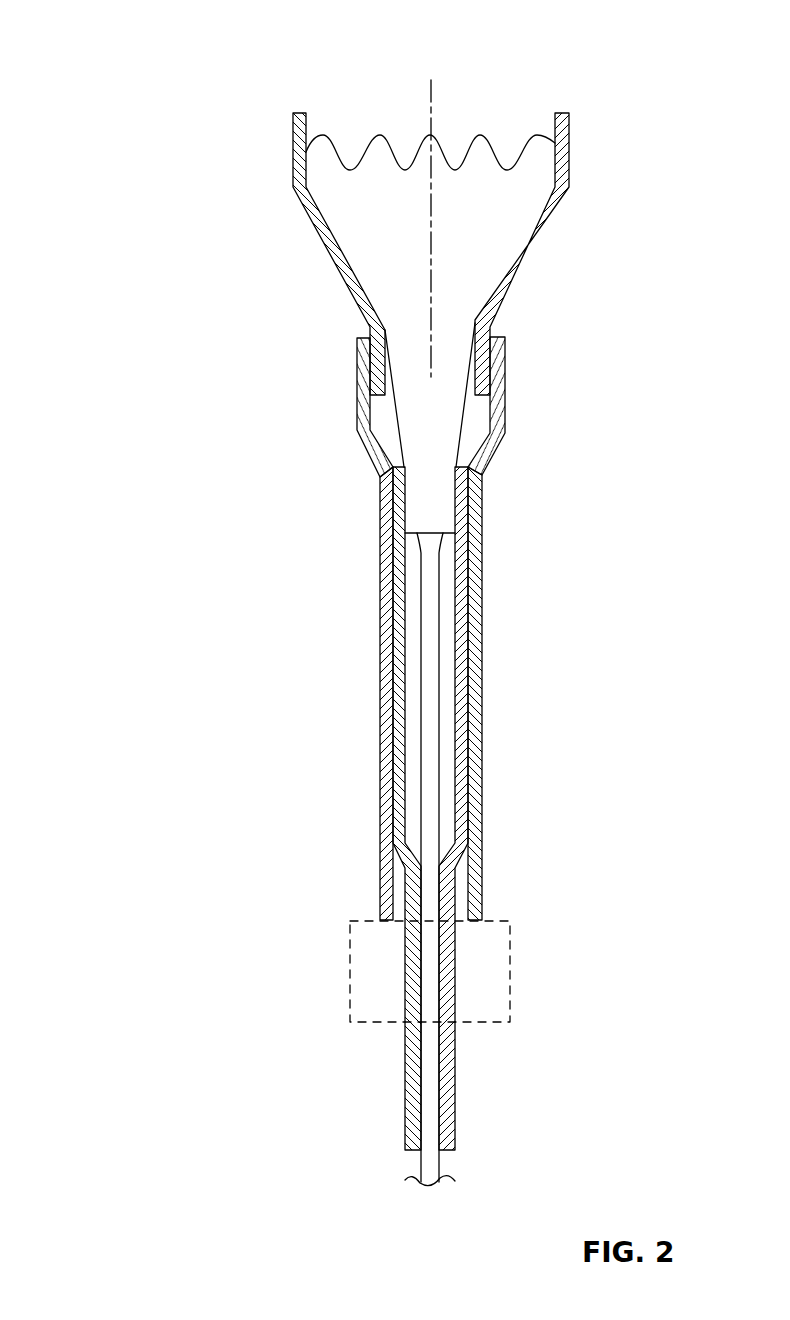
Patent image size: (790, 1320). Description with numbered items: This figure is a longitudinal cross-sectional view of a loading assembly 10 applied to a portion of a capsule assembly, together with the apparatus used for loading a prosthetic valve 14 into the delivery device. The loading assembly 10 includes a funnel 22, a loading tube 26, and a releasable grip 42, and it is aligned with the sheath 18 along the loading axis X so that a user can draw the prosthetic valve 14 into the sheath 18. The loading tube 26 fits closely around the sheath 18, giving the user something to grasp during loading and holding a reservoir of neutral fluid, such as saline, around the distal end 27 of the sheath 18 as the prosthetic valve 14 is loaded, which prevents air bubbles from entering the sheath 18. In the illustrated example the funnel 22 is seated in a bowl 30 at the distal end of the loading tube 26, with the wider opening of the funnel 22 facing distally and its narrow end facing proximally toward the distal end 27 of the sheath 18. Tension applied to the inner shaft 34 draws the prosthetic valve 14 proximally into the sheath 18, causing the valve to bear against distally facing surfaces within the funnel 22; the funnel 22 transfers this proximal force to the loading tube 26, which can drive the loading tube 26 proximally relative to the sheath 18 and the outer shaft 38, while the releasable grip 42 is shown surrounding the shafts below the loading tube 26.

The loading assembly 10 is at (150, 78).
The prosthetic valve 14 is at (468, 407).
The sheath 18 is at (455, 637).
The funnel 22 is at (546, 231).
The loading tube 26 is at (482, 549).
The distal end of sheath 27 is at (398, 468).
The bowl 30 is at (505, 418).
The inner shaft 34 is at (421, 1168).
The outer shaft 38 is at (457, 1047).
The releasable grip 42 is at (352, 940).